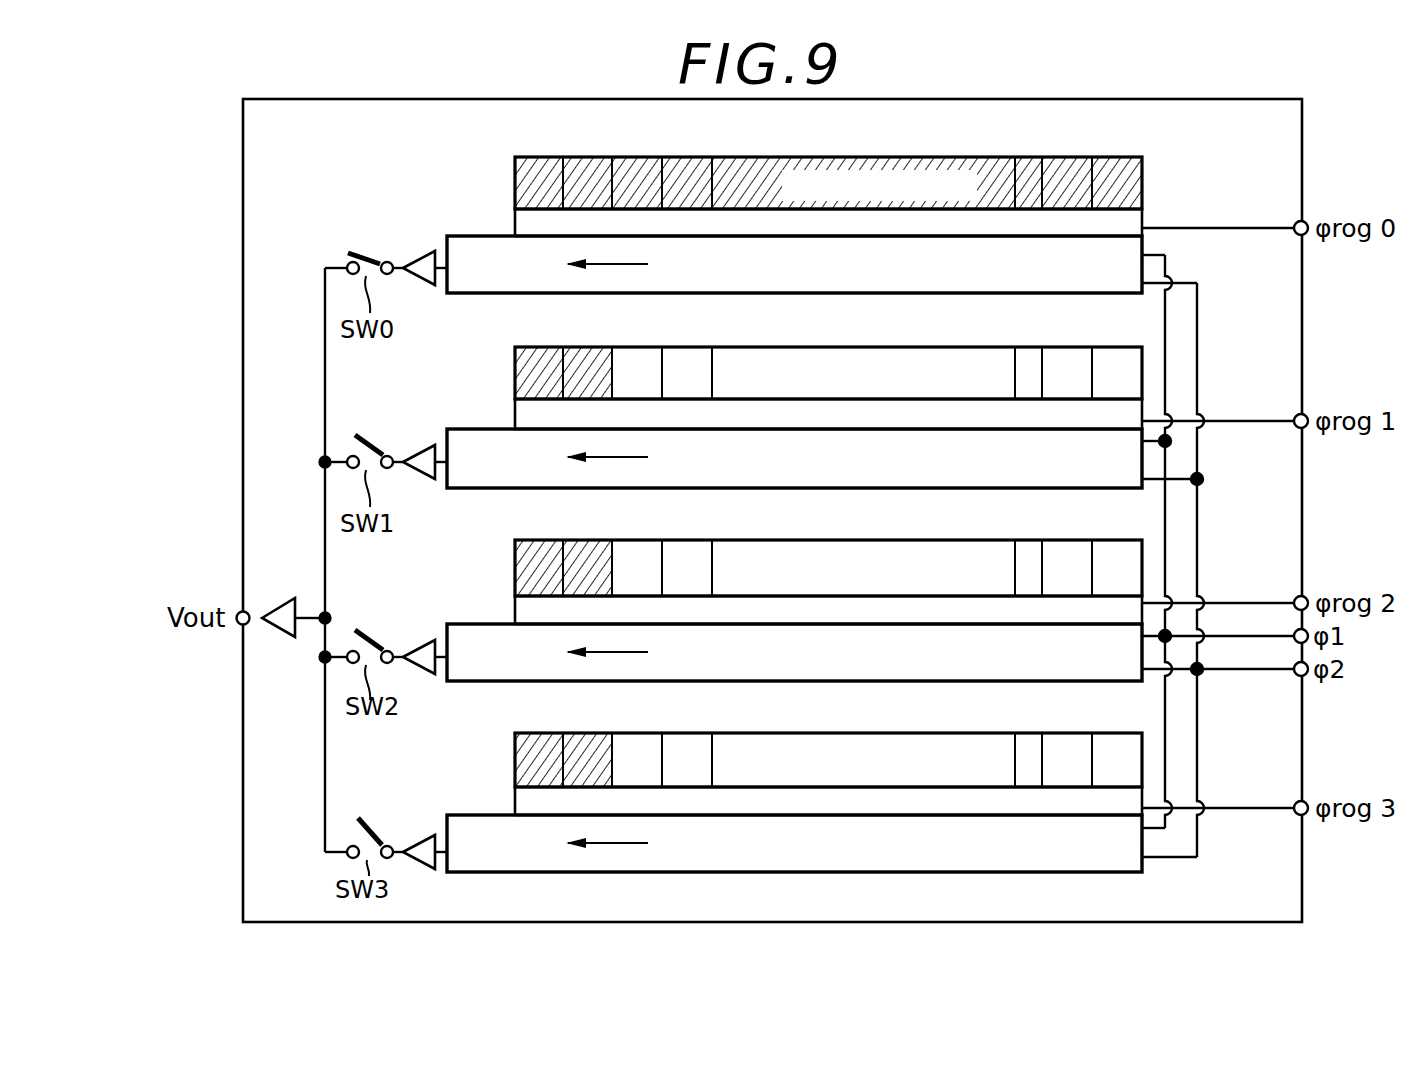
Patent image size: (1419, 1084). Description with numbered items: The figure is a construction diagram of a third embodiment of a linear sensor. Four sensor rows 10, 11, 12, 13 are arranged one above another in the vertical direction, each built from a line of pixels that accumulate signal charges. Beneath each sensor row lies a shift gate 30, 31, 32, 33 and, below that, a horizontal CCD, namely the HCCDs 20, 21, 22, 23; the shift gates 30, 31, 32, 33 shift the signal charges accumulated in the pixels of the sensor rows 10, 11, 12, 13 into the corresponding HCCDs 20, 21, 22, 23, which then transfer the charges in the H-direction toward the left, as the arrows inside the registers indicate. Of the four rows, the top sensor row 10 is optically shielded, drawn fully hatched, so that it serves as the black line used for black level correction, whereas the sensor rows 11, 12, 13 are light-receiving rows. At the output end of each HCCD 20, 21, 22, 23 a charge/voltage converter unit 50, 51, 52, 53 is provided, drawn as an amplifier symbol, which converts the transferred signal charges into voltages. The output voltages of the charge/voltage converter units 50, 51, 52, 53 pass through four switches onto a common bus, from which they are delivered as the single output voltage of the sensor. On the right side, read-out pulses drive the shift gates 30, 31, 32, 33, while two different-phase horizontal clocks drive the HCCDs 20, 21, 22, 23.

The sensor row 10 is at (545, 157).
The HCCD 20 is at (684, 256).
The shift gate 30 is at (1007, 224).
The charge/voltage converter unit 50 is at (420, 250).
The sensor row 11 is at (545, 347).
The HCCD 21 is at (690, 446).
The shift gate 31 is at (1003, 414).
The charge/voltage converter unit 51 is at (420, 444).
The sensor row 12 is at (545, 540).
The HCCD 22 is at (690, 641).
The shift gate 32 is at (1017, 613).
The charge/voltage converter unit 52 is at (422, 639).
The sensor row 13 is at (536, 733).
The HCCD 23 is at (690, 832).
The shift gate 33 is at (1000, 803).
The charge/voltage converter unit 53 is at (424, 834).